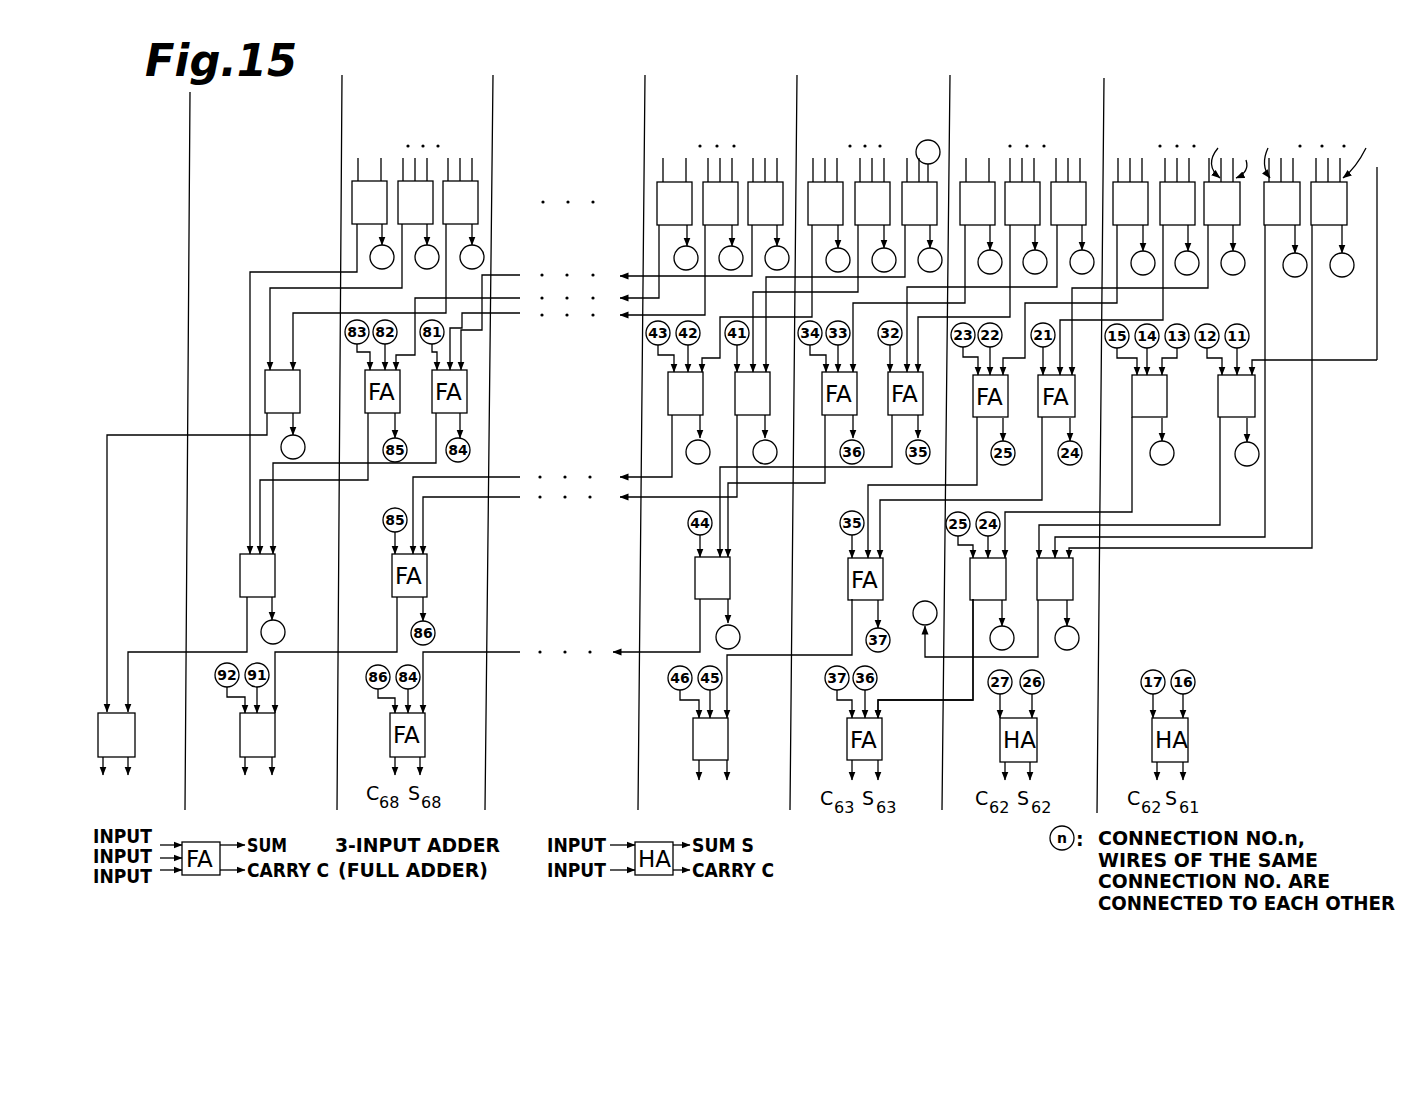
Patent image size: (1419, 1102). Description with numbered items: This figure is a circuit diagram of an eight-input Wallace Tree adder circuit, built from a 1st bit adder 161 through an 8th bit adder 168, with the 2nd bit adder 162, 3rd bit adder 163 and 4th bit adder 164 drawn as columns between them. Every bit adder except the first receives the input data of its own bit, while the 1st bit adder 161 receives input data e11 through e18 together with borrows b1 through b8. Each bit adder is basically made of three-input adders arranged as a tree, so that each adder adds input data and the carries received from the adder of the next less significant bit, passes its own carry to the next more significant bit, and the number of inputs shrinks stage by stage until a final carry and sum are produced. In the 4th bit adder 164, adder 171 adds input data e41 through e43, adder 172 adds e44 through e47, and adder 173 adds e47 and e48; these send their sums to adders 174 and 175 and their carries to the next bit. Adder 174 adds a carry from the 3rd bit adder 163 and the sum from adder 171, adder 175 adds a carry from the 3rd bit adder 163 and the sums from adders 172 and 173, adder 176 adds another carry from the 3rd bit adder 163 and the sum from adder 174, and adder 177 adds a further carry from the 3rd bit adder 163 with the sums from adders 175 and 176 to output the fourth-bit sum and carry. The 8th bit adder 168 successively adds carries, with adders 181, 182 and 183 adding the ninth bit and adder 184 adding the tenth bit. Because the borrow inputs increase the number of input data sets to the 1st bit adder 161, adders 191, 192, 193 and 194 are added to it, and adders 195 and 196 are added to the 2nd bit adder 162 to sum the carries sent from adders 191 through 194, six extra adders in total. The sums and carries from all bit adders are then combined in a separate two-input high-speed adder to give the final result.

The 1st bit adder 161 is at (1246, 60).
The 2nd bit adder 162 is at (1098, 60).
The 3rd bit adder 163 is at (946, 55).
The 4th bit adder 164 is at (795, 55).
The 8th bit adder 168 is at (447, 70).
The adder 171 is at (760, 182).
The adder 172 is at (722, 182).
The adder 173 is at (672, 182).
The adder 174 is at (735, 395).
The adder 175 is at (668, 390).
The adder 176 is at (732, 594).
The adder 177 is at (728, 752).
The adder 181 is at (290, 403).
The adder 182 is at (272, 590).
The adder 183 is at (275, 748).
The adder 184 is at (135, 748).
The adder 191 is at (1335, 197).
The adder 192 is at (1291, 197).
The adder 193 is at (1218, 385).
The adder 194 is at (1167, 405).
The adder 195 is at (1040, 590).
The adder 196 is at (972, 590).